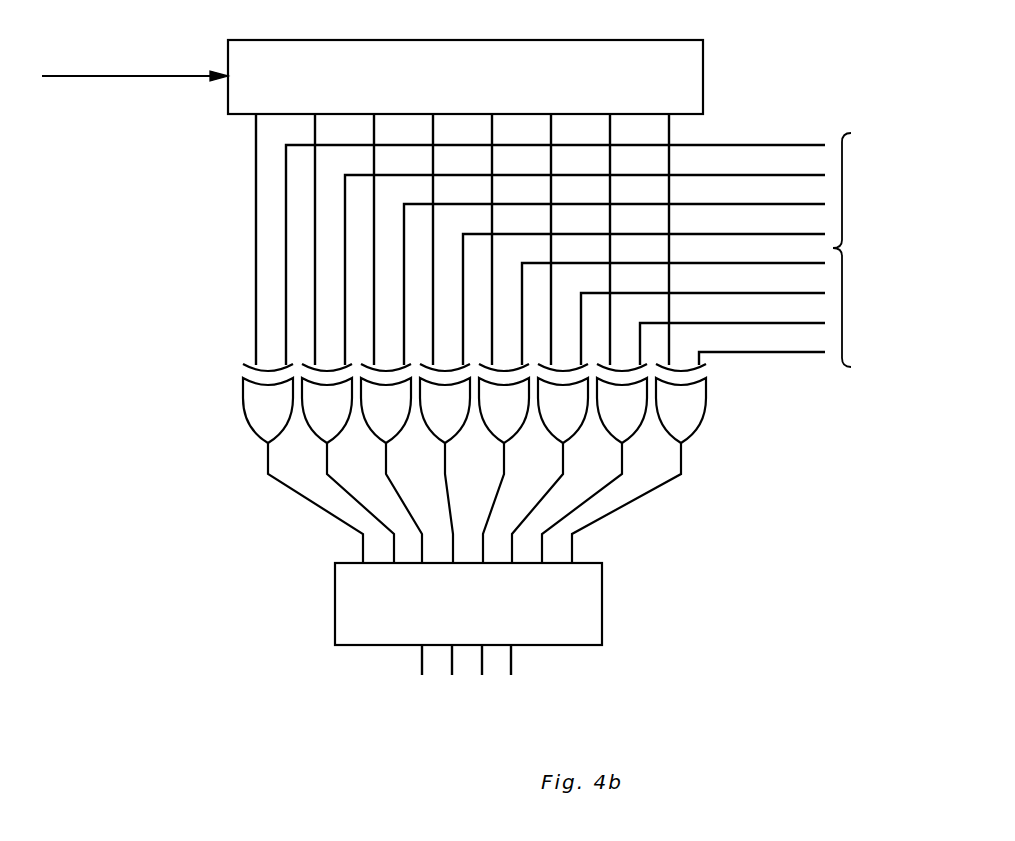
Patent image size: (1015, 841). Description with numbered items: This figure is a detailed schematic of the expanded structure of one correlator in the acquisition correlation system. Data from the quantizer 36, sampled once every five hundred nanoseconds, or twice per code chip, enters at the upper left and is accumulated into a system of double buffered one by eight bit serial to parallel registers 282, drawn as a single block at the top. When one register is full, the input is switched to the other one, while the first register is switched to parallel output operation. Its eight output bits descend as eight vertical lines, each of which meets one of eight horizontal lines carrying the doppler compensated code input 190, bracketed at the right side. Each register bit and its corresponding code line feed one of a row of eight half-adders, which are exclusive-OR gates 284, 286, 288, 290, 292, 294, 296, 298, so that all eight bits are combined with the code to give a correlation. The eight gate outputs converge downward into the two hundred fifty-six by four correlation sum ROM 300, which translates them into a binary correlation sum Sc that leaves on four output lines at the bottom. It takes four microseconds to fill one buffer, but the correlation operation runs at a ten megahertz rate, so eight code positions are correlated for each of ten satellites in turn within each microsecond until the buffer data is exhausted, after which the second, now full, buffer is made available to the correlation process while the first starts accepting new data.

The quantizer 36 is at (115, 104).
The double buffered 1 x 8 bit serial to parallel registers 282 is at (696, 42).
The doppler compensated code input 190 is at (633, 250).
The half-adder (exclusive-OR) 284 is at (249, 424).
The half-adder (exclusive-OR) 286 is at (310, 424).
The half-adder (exclusive-OR) 288 is at (369, 424).
The half-adder (exclusive-OR) 290 is at (428, 424).
The half-adder (exclusive-OR) 292 is at (487, 424).
The half-adder (exclusive-OR) 294 is at (546, 424).
The half-adder (exclusive-OR) 296 is at (605, 424).
The half-adder (exclusive-OR) 298 is at (664, 424).
The correlation sum ROM 300 is at (602, 590).